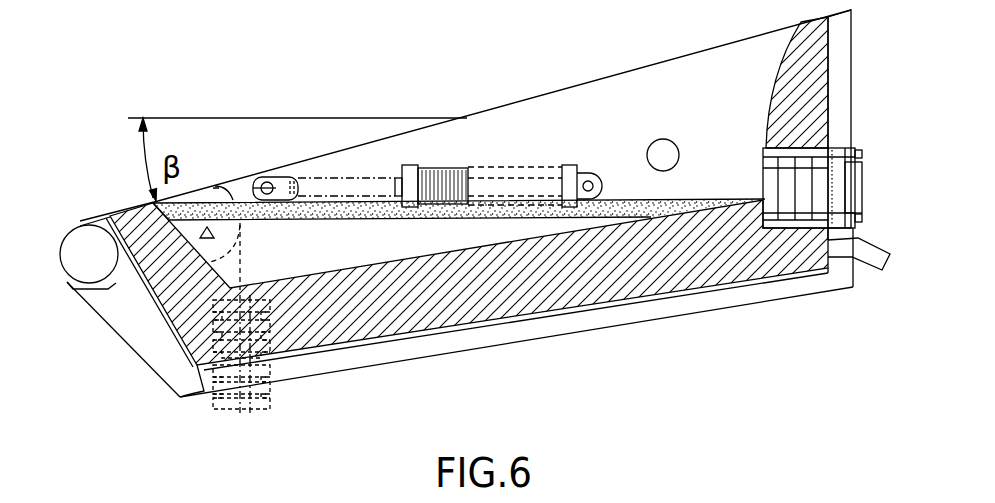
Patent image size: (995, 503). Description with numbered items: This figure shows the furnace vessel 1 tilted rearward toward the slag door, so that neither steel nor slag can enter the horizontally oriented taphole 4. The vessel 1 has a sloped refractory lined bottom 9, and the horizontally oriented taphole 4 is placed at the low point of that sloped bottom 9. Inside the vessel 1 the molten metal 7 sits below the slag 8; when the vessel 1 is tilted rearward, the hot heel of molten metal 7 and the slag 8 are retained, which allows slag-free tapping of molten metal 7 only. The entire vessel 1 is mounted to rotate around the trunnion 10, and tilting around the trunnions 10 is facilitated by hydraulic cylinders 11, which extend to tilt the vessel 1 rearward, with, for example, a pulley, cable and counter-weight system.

The vessel 1 is at (852, 88).
The horizontally oriented taphole 4 is at (862, 178).
The molten metal 7 is at (298, 263).
The slag 8 is at (346, 210).
The sloped refractory lined bottom 9 is at (432, 255).
The trunnion 10 is at (660, 153).
The hydraulic cylinder 11 is at (511, 166).